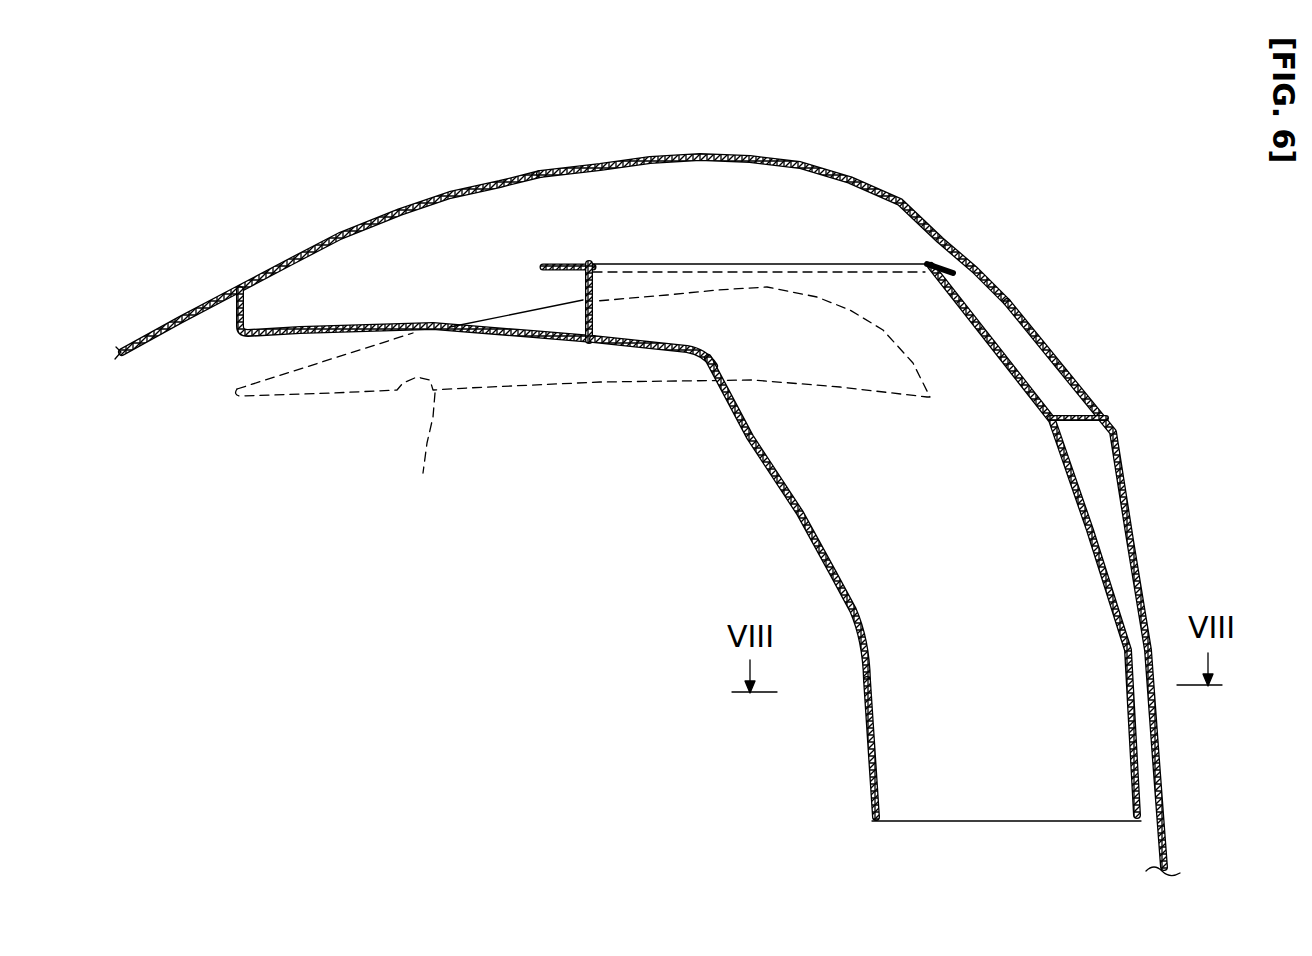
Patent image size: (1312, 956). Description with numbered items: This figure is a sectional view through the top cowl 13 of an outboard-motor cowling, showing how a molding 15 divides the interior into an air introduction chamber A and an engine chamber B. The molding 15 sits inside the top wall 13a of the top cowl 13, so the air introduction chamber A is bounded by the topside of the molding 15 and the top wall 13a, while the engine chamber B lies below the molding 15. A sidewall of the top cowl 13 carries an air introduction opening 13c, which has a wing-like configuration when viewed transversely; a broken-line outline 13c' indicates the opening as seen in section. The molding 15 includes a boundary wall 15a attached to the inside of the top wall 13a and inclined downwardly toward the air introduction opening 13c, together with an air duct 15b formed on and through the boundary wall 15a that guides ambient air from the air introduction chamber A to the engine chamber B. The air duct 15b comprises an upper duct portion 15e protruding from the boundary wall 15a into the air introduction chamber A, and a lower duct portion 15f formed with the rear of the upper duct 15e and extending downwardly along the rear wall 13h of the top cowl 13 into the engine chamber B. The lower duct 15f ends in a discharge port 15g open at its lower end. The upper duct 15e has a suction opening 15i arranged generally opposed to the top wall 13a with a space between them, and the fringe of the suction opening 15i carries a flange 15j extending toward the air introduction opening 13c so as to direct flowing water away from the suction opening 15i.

The top cowl 13 is at (338, 226).
The top wall 13a is at (703, 154).
The air introduction opening 13c is at (416, 229).
The lower panel portion (alternative position) 13c' is at (583, 405).
The rear wall 13h is at (1143, 567).
The molding 15 is at (861, 246).
The boundary wall 15a is at (535, 335).
The air duct 15b is at (832, 594).
The upper duct portion 15e is at (583, 318).
The lower duct portion 15f is at (863, 710).
The discharge port 15g is at (880, 823).
The suction opening 15i is at (667, 277).
The flange 15j is at (560, 263).
The air introduction chamber A is at (457, 240).
The engine chamber B is at (715, 782).